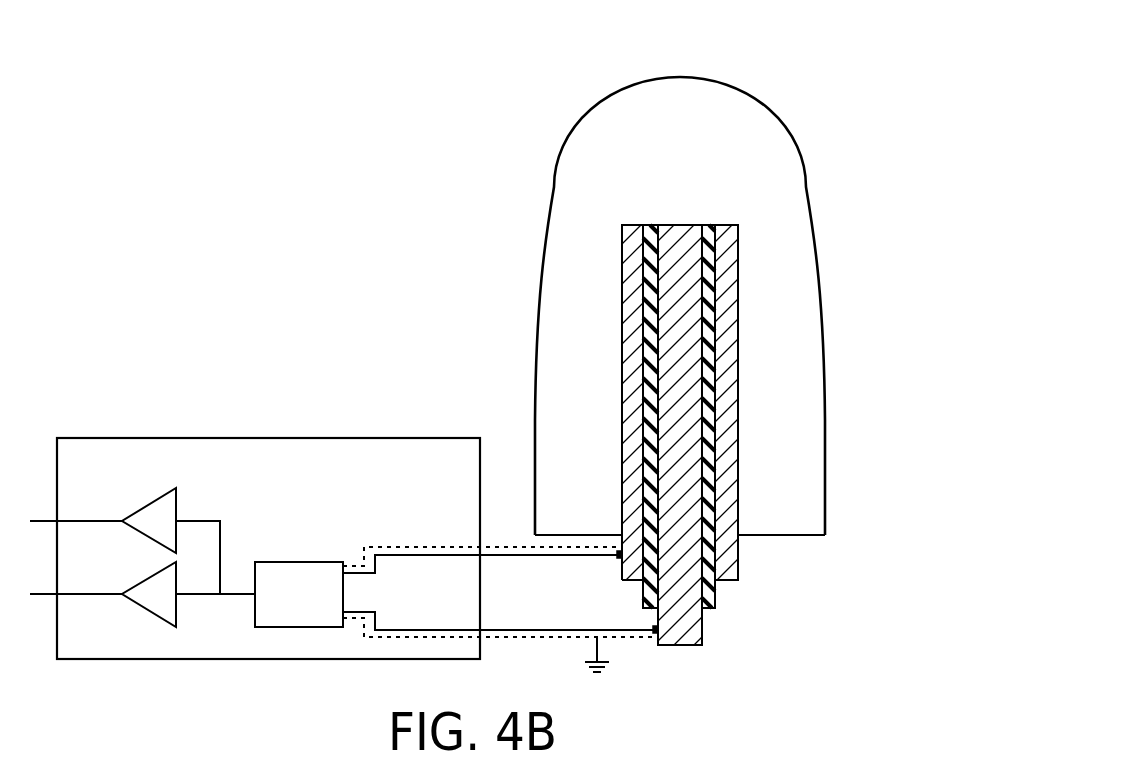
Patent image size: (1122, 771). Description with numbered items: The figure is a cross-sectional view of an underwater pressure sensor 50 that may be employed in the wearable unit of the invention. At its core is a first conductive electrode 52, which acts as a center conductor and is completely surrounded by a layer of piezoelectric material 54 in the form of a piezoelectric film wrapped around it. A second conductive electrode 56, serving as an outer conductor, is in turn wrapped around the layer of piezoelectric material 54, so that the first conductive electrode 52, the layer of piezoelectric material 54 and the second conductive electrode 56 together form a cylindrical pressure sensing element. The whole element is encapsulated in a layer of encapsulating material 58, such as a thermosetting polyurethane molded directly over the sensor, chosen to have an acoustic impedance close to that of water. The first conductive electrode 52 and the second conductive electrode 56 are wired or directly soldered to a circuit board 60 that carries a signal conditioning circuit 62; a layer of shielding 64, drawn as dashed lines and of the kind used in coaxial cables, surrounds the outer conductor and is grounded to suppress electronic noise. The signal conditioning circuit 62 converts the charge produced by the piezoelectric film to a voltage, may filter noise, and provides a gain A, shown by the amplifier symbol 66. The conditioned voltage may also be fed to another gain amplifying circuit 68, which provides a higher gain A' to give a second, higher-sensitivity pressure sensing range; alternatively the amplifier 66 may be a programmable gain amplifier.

The underwater pressure sensor 50 is at (740, 345).
The first conductive electrode 52 is at (703, 630).
The layer of piezoelectric material 54 is at (716, 593).
The second conductive electrode 56 is at (738, 558).
The layer of encapsulating material 58 is at (802, 342).
The circuit board 60 is at (273, 494).
The signal conditioning circuit 62 is at (343, 587).
The layer of shielding 64 is at (555, 640).
The amplifier symbol 66 is at (172, 535).
The gain amplifying circuit 68 is at (172, 607).